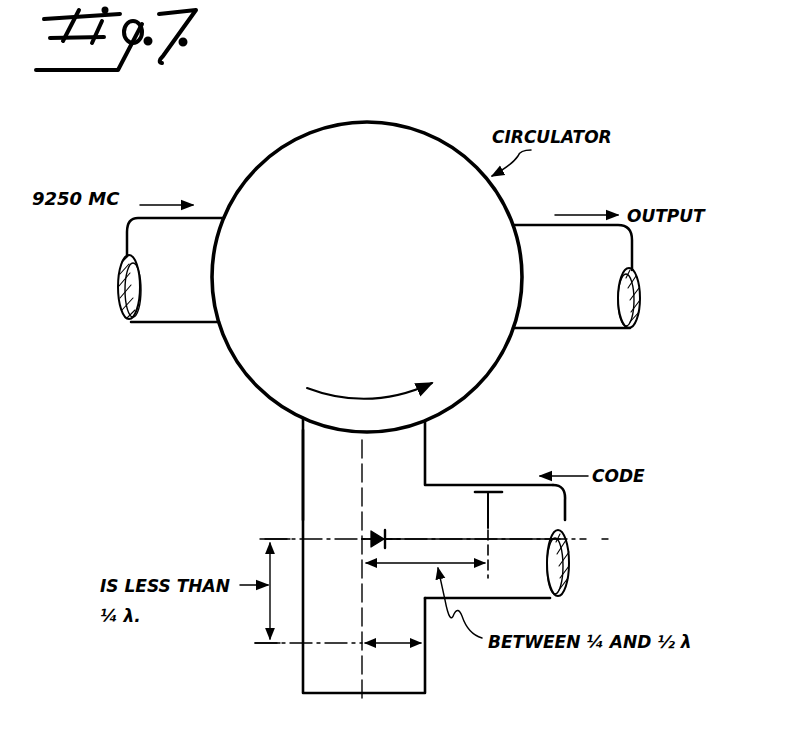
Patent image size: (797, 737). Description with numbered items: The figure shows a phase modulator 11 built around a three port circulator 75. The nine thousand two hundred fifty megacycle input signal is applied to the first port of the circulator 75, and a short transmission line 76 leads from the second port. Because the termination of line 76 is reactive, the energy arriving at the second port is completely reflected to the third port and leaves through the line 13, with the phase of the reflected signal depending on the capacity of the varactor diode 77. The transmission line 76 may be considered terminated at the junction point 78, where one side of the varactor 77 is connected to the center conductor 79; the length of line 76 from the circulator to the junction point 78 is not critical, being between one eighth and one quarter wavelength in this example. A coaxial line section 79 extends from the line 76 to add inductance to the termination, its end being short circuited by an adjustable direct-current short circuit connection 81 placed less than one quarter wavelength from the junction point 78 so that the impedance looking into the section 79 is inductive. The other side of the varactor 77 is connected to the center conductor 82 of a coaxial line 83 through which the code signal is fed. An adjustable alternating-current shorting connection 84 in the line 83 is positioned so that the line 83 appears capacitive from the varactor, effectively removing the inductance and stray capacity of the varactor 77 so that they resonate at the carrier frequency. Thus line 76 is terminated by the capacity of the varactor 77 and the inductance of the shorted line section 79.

The three port circulator 75 is at (322, 130).
The line 13 is at (577, 330).
The modulator 11 is at (270, 446).
The short transmission line 76 is at (303, 477).
The center conductor (coaxial line section) 79 is at (362, 470).
The varactor diode 77 is at (386, 528).
The junction point 78 is at (368, 539).
The center conductor 82 is at (398, 540).
The adjustable alternating-current shorting connection 84 is at (486, 512).
The coaxial line 83 is at (550, 509).
The adjustable direct-current short circuit connection 81 is at (384, 648).